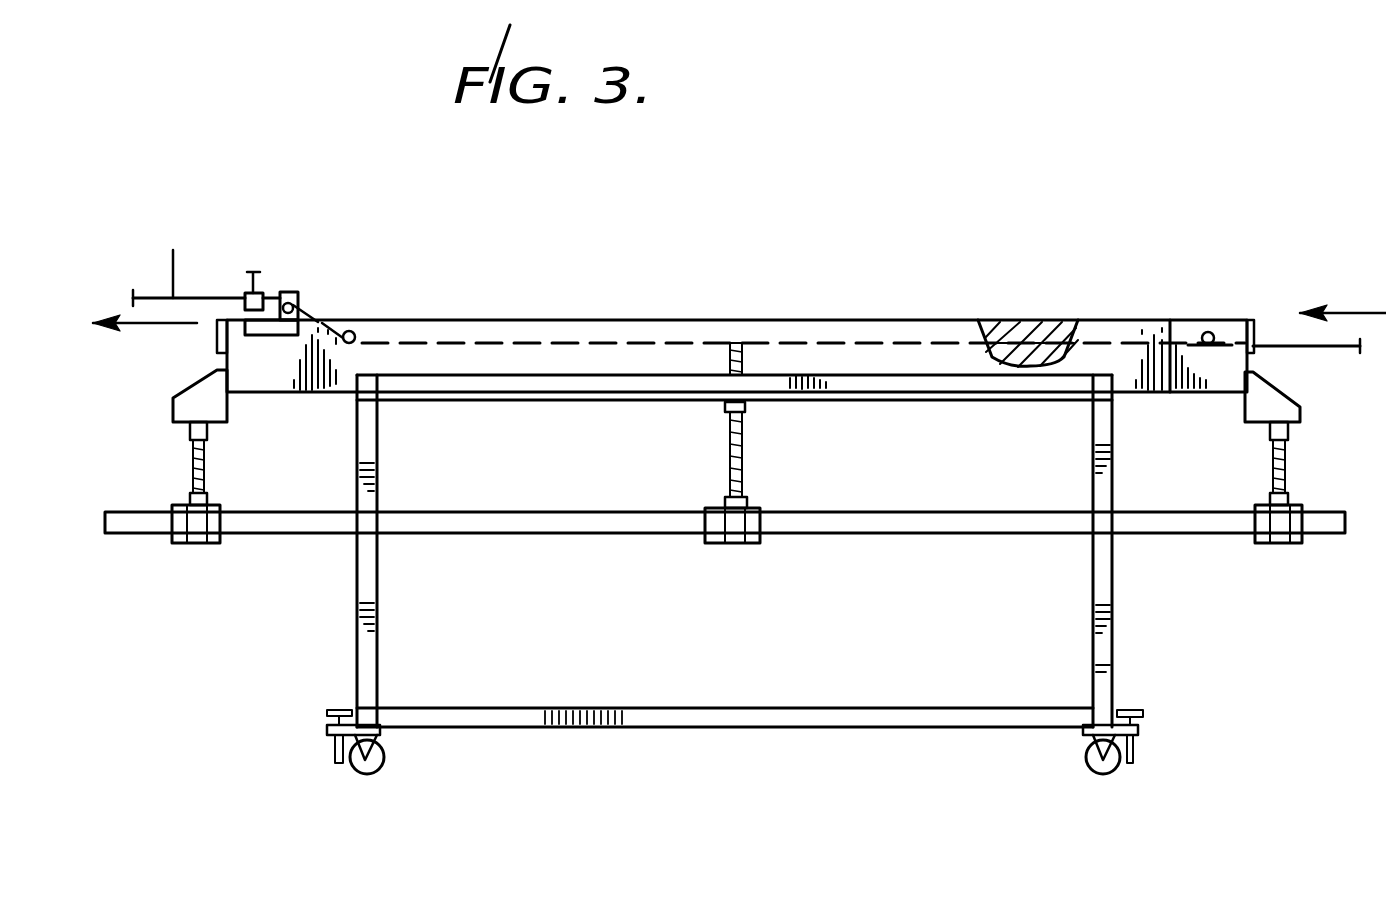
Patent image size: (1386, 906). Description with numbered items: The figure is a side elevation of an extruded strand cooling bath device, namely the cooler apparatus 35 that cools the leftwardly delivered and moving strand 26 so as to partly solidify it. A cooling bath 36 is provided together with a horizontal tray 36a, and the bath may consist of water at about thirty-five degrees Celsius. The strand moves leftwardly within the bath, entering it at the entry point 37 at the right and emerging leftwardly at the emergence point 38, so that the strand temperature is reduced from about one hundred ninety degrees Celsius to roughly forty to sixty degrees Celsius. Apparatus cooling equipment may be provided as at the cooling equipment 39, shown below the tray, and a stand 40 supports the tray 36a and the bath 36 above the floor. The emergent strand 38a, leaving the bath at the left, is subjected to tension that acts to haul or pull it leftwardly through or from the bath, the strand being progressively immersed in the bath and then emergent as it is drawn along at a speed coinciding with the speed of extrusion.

The strand 26 is at (1322, 348).
The cooler apparatus 35 is at (743, 290).
The cooling bath 36 is at (1015, 328).
The horizontal tray 36a is at (1135, 325).
The bath entry point 37 is at (1265, 328).
The bath emergence point 38 is at (320, 318).
The emergent strand 38a is at (175, 295).
The cooling equipment 39 is at (872, 542).
The stand 40 is at (1118, 612).